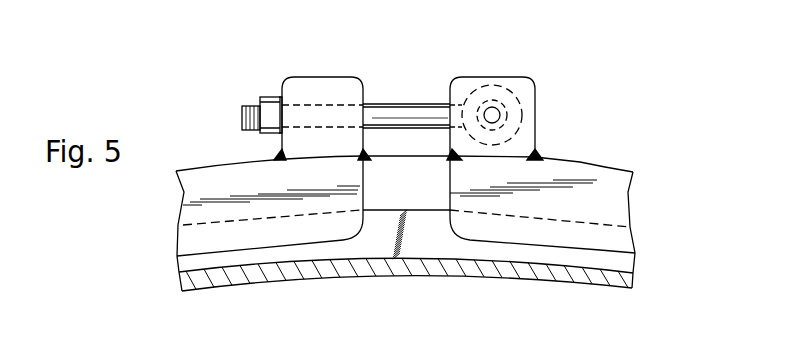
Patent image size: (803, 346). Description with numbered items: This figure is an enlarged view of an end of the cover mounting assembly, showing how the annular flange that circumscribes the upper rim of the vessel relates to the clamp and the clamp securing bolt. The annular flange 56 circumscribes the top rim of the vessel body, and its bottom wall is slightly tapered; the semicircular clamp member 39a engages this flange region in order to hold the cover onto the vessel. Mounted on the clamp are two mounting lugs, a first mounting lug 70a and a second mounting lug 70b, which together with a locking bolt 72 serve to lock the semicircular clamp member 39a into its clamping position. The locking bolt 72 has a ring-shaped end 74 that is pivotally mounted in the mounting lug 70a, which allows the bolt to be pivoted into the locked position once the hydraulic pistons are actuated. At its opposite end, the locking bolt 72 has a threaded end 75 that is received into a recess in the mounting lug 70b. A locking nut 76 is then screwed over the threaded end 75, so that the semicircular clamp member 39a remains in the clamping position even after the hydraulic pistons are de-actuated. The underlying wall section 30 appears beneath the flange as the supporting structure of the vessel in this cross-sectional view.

The mounting lug 70b is at (323, 76).
The mounting lug 70a is at (536, 97).
The locking bolt 72 is at (401, 84).
The ring-shaped end 74 is at (493, 85).
The threaded end 75 is at (242, 117).
The locking nut 76 is at (268, 97).
The semicircular clamp member 39a is at (580, 173).
The annular flange 56 is at (430, 240).
The skin panel 30 is at (538, 272).